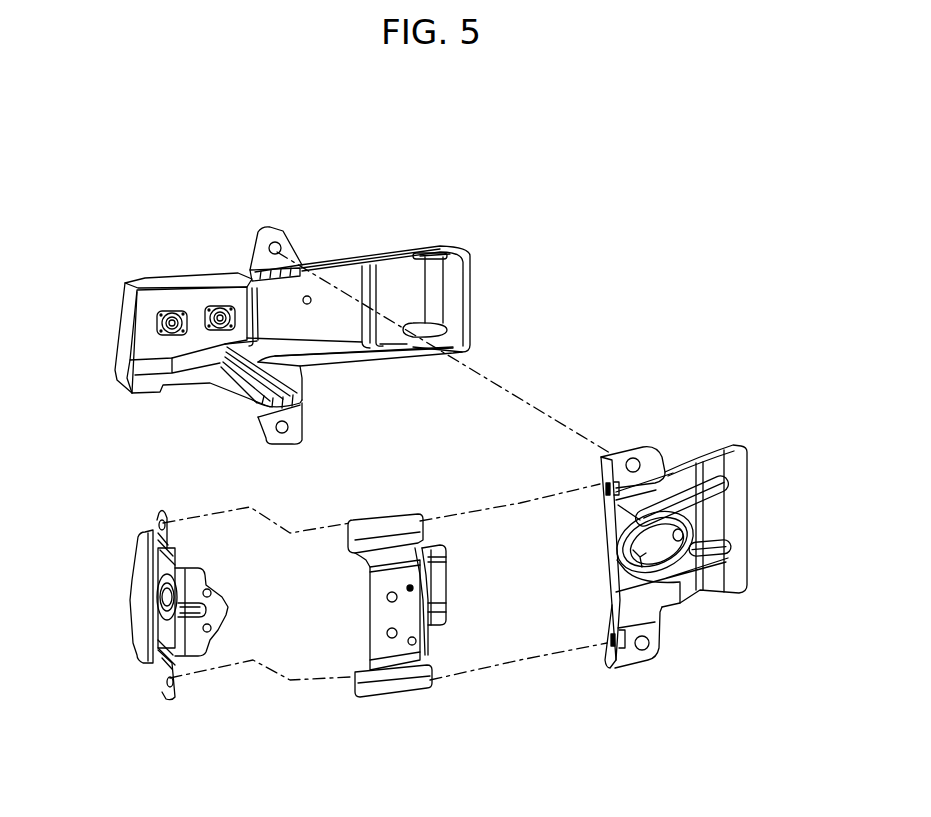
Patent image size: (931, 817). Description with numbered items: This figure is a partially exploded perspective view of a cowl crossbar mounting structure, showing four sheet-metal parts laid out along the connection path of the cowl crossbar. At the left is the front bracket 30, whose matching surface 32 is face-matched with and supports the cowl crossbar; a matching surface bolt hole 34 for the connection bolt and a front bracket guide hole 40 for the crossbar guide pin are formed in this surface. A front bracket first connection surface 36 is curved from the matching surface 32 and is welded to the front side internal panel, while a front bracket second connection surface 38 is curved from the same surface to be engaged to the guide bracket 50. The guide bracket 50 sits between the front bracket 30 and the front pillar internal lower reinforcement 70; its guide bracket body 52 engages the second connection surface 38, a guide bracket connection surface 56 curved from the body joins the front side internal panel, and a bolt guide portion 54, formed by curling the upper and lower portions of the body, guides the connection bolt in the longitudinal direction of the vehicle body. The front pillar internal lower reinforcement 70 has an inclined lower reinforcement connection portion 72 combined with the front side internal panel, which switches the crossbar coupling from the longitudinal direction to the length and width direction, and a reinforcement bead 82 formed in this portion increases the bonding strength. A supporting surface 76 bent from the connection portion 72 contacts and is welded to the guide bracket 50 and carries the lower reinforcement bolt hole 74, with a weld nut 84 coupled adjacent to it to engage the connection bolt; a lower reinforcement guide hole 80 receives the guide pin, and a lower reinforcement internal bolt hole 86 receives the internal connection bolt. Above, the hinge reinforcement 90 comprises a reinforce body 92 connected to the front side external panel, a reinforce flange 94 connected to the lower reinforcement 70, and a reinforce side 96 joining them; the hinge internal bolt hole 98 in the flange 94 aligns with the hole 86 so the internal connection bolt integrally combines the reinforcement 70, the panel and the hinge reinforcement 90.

The front bracket 30 is at (110, 660).
The matching surface 32 is at (168, 630).
The matching surface bolt hole 34 is at (163, 520).
The front bracket first connection surface 36 is at (140, 560).
The front bracket second connection surface 38 is at (217, 606).
The front bracket guide hole 40 is at (160, 598).
The guide bracket 50 is at (355, 715).
The guide bracket body 52 is at (380, 620).
The bolt guide portion 54 is at (378, 520).
The guide bracket connection surface 56 is at (448, 612).
The front pillar internal lower reinforcement 70 is at (710, 625).
The lower reinforcement connection portion 72 is at (699, 452).
The lower reinforcement bolt hole 74 is at (604, 485).
The supporting surface 76 is at (608, 535).
The lower reinforcement guide hole 80 is at (620, 567).
The reinforcement bead 82 is at (725, 552).
The weld nut 84 is at (660, 455).
The lower reinforcement internal bolt hole 86 is at (632, 461).
The hinge reinforcement 90 is at (176, 256).
The reinforce body 92 is at (347, 272).
The reinforce flange 94 is at (262, 230).
The reinforce side 96 is at (350, 352).
The hinge internal bolt hole 98 is at (281, 247).